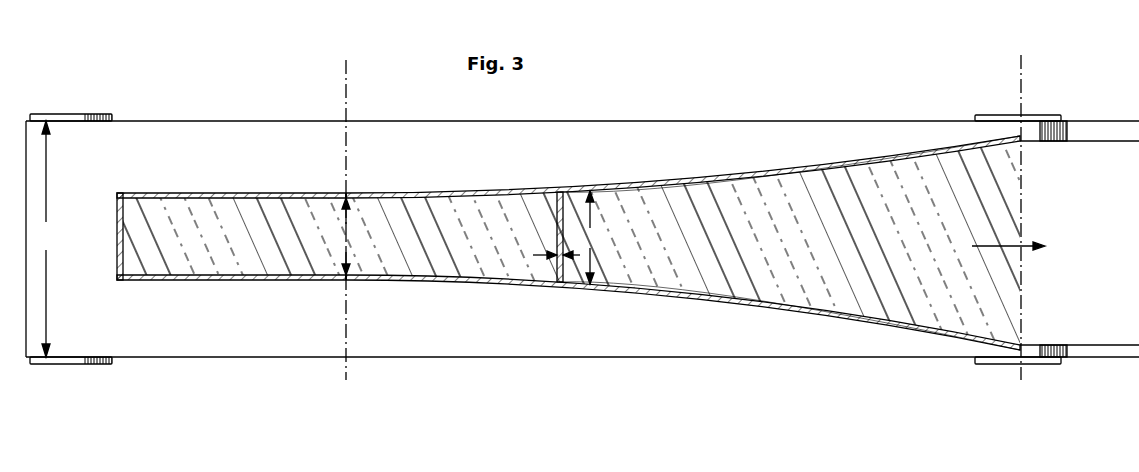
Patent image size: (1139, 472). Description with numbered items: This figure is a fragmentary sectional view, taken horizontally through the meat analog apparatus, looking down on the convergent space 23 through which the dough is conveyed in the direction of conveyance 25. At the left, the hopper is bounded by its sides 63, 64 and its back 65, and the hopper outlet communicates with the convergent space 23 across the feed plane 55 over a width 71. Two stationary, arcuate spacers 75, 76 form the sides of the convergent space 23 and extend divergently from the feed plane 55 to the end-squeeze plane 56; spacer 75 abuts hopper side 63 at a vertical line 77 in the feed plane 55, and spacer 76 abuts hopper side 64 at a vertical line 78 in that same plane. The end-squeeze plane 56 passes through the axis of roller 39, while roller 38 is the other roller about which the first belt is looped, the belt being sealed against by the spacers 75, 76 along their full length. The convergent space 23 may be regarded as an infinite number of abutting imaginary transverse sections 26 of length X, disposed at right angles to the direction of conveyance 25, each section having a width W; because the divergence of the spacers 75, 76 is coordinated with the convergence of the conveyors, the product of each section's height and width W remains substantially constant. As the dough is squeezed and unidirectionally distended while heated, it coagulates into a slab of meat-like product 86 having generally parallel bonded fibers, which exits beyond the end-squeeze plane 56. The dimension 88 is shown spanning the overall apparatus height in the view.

The convergent space 23 is at (704, 178).
The direction of conveyance 25 is at (1022, 245).
The imaginary transverse sections 26 is at (557, 219).
The roller 38 is at (80, 113).
The roller 39 is at (1040, 116).
The feed plane 55 is at (347, 73).
The end-squeeze plane 56 is at (1022, 78).
The hopper side 63 is at (195, 281).
The hopper side 64 is at (243, 192).
The back 65 is at (117, 213).
The width 71 is at (346, 236).
The arcuate spacer 75 is at (644, 296).
The arcuate spacer 76 is at (641, 186).
The vertical line 77 is at (350, 282).
The vertical line 78 is at (348, 192).
The slab of meat-like product 86 is at (1102, 296).
The overall height dimension 88 is at (49, 239).
The width W is at (591, 237).
The length X is at (548, 254).